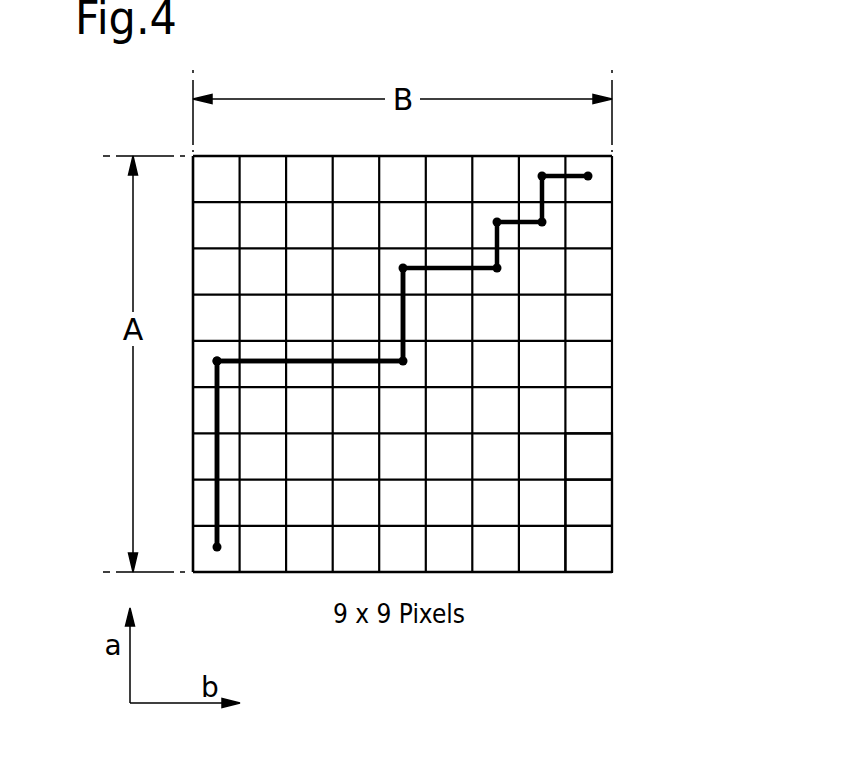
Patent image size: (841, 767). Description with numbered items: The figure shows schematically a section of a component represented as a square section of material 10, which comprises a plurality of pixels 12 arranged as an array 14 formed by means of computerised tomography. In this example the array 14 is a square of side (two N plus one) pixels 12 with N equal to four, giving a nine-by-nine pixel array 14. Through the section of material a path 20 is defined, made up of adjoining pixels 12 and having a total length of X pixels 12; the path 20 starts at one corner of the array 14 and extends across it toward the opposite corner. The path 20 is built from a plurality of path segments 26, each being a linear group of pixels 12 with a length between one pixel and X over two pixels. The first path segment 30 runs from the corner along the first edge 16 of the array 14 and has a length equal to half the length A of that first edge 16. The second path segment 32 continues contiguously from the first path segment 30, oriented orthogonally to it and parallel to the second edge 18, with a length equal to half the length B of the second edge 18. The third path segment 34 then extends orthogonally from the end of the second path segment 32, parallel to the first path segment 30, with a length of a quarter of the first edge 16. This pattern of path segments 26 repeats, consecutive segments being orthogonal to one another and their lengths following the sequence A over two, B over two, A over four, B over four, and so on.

The section of material 10 is at (640, 210).
The pixels 12 is at (588, 450).
The array 14 is at (577, 572).
The first edge 16 is at (193, 213).
The second edge 18 is at (253, 154).
The path 20 is at (216, 492).
The path segments 26 is at (216, 455).
The first path segment 30 is at (216, 402).
The second path segment 32 is at (270, 361).
The third path segment 34 is at (400, 317).